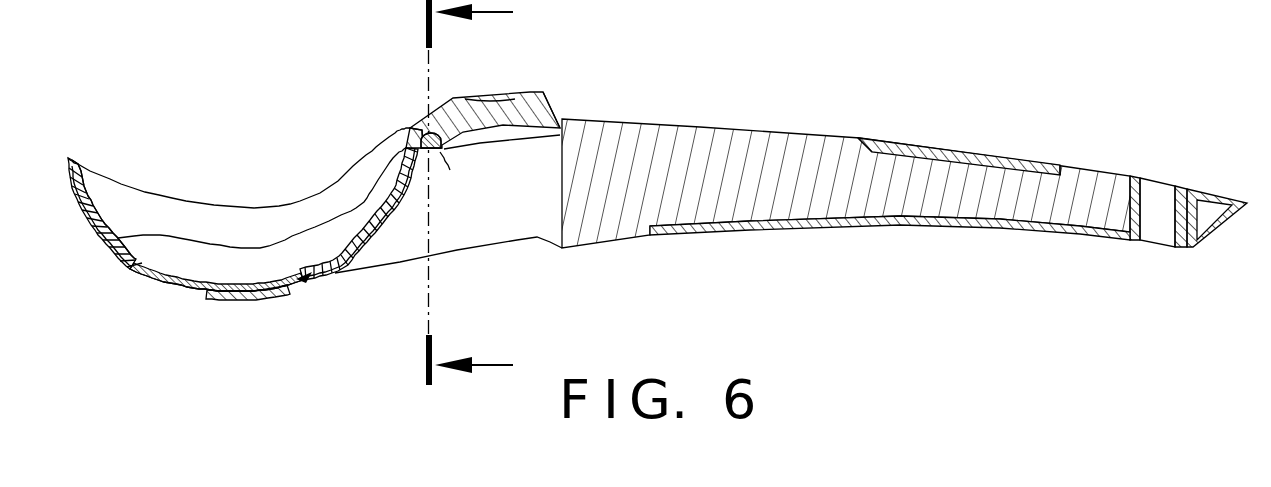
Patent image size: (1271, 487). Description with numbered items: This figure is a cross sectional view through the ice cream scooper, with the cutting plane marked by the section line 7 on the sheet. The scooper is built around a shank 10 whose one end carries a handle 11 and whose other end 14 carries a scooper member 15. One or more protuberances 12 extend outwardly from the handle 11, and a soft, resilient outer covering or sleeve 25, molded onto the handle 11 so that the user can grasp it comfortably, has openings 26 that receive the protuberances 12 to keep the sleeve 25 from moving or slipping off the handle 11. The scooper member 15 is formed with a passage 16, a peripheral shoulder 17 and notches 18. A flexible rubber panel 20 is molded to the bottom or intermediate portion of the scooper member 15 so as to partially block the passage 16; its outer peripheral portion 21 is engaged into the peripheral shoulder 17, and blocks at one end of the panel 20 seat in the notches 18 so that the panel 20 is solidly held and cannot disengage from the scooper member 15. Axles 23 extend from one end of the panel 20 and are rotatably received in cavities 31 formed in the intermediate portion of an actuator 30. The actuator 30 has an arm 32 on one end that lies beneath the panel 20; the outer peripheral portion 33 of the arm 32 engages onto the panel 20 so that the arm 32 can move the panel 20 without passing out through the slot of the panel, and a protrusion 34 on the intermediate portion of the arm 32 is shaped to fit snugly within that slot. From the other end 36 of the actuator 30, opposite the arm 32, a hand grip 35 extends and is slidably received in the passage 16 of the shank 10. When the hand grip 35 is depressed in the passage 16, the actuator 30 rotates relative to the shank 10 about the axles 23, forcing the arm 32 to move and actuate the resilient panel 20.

The section line 7- 7 is at (469, 203).
The shank 10 is at (537, 230).
The handle 11 is at (904, 152).
The protuberances 12 is at (833, 147).
The other end 14 is at (212, 216).
The scooper member 15 is at (85, 205).
The passage 16 is at (196, 299).
The peripheral shoulder 17 is at (83, 259).
The notches 18 is at (361, 247).
The panel 20 is at (180, 280).
The outer peripheral portion 21 is at (262, 184).
The axles 23 is at (469, 235).
The sleeve 25 is at (970, 157).
The openings 26 is at (963, 130).
The actuator 30 is at (374, 132).
The cavities 31 is at (423, 128).
The arm 32 is at (283, 290).
The outer peripheral portion 33 is at (245, 328).
The protrusion 34 is at (239, 171).
The hand grip 35 is at (496, 97).
The other end 36 is at (576, 66).